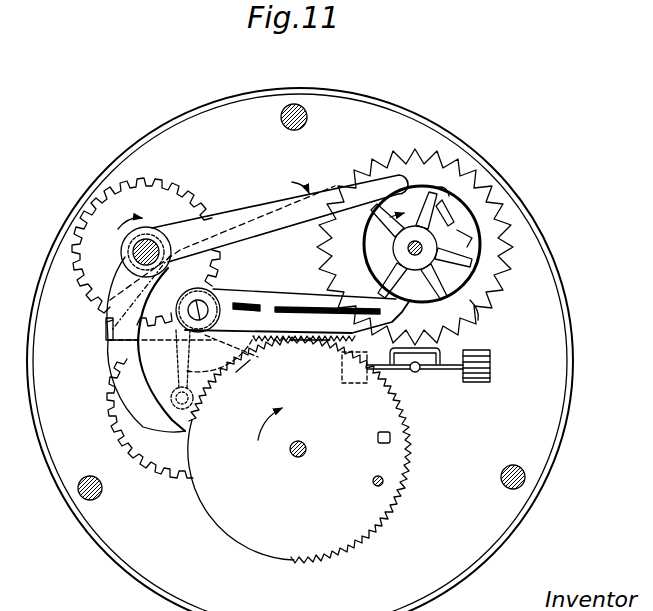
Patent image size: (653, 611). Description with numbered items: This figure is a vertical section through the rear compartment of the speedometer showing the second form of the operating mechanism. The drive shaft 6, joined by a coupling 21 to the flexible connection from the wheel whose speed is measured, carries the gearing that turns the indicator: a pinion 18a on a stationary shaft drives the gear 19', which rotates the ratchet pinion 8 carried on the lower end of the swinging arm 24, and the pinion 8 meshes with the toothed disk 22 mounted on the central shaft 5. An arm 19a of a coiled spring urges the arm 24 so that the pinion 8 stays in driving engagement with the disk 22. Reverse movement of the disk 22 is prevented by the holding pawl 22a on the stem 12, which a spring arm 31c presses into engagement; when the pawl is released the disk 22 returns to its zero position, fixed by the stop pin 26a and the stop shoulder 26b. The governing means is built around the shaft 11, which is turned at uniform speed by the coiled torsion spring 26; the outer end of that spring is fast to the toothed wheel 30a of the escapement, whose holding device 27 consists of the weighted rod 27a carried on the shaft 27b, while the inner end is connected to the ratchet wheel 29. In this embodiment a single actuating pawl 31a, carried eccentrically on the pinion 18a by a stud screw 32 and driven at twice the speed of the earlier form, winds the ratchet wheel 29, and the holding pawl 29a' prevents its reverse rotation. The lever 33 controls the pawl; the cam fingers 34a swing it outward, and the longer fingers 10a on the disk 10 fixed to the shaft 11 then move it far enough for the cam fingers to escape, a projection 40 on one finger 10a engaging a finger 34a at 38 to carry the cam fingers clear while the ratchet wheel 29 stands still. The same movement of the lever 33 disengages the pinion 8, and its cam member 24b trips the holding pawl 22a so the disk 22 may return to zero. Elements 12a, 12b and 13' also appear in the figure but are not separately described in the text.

The shaft 5 is at (308, 449).
The drive shaft 6 is at (132, 251).
The ratchet pinion 8 is at (182, 369).
The disk 10 is at (165, 110).
The fingers 10a is at (357, 205).
The shaft 11 is at (426, 245).
The stem 12 is at (308, 115).
The pillar 12a is at (95, 476).
The pillar 12b is at (513, 465).
The gear wheel 13' is at (146, 245).
The pinion 18a is at (215, 294).
The gear 19' is at (140, 418).
The spring arm 19a is at (304, 345).
The coupling 21 is at (247, 368).
The toothed disk 22 is at (218, 520).
The holding pawl 22a is at (110, 340).
The arm 24 is at (170, 392).
The cam member 24b is at (106, 338).
The coiled torsion spring 26 is at (458, 356).
The stop pin 26a is at (385, 483).
The stop shoulder 26b is at (392, 438).
The holding device 27 is at (447, 371).
The rod 27a is at (410, 372).
The shaft 27b is at (420, 372).
The ratchet wheel 29 is at (420, 185).
The holding pawl 29a' is at (284, 181).
The toothed wheel 30a is at (480, 322).
The actuating pawl 31a is at (314, 339).
The spring arm 31c is at (106, 326).
The stud screw 32 is at (256, 336).
The lever 33 is at (292, 294).
The cam fingers 34a is at (337, 239).
The engagement point 38 is at (422, 242).
The projection 40 is at (455, 240).